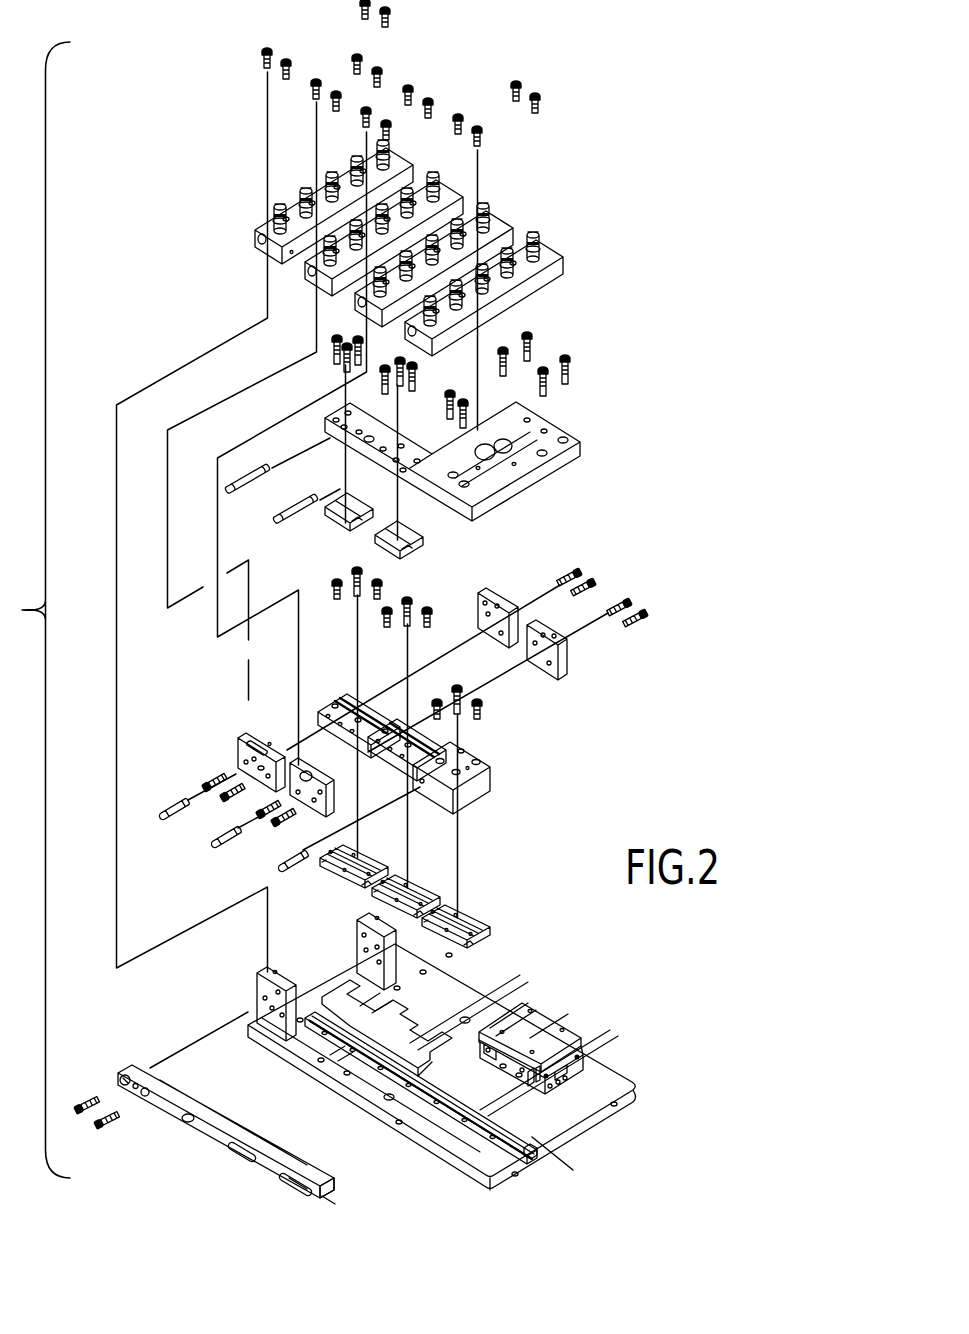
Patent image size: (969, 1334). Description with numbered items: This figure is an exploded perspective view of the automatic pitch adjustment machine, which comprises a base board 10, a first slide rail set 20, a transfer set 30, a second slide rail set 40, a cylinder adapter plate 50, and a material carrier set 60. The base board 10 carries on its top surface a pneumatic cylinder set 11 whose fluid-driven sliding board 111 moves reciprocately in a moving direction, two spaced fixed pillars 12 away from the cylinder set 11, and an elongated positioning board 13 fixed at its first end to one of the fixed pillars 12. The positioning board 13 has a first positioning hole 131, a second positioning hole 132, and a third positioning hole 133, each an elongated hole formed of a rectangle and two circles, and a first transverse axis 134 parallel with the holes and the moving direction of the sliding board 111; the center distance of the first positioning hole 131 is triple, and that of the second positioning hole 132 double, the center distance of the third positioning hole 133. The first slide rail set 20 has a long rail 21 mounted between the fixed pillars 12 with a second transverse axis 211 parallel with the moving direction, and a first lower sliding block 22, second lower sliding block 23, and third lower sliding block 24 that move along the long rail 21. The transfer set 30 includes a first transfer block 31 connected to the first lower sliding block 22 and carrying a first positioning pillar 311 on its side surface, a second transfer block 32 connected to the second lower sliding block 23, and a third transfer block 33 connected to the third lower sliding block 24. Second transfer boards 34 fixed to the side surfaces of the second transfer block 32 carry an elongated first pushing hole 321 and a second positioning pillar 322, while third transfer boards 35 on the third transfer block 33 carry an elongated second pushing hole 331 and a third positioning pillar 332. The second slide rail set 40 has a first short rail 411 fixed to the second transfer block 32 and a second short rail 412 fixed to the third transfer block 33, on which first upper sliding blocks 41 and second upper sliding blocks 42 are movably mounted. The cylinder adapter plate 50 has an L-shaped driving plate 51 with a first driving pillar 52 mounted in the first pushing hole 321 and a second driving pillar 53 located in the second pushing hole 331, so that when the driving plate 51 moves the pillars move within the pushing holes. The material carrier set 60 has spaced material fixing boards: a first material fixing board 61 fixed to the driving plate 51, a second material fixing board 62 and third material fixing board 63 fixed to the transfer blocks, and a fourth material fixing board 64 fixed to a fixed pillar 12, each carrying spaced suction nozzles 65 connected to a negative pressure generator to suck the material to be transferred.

The base board 10 is at (470, 1053).
The cylinder set 11 is at (566, 1041).
The sliding board 111 is at (548, 1012).
The fixed pillar 12 is at (358, 933).
The positioning board 13 is at (245, 1140).
The first positioning hole 131 is at (295, 1183).
The second positioning hole 132 is at (242, 1160).
The third positioning hole 133 is at (185, 1120).
The first transverse axis 134 is at (348, 1210).
The first slide rail set 20 is at (413, 900).
The long rail 21 is at (503, 1145).
The second transverse axis 211 is at (571, 1168).
The first lower sliding block 22 is at (488, 932).
The second lower sliding block 23 is at (440, 892).
The third lower sliding block 24 is at (355, 880).
The transfer set 30 is at (359, 729).
The first transfer block 31 is at (490, 780).
The first positioning pillar 311 is at (283, 866).
The second transfer block 32 is at (418, 745).
The first pushing hole 321 is at (305, 785).
The second positioning pillar 322 is at (218, 845).
The third transfer block 33 is at (372, 700).
The second pushing hole 331 is at (255, 745).
The third positioning pillar 332 is at (160, 806).
The second transfer board 34 is at (498, 595).
The third transfer board 35 is at (567, 650).
The second slide rail set 40 is at (405, 617).
The first upper sliding block 41 is at (417, 540).
The first short rail 411 is at (470, 715).
The second short rail 412 is at (350, 694).
The second upper sliding block 42 is at (352, 505).
The cylinder adapter plate 50 is at (418, 462).
The driving plate 51 is at (548, 426).
The first driving pillar 52 is at (278, 516).
The second driving pillar 53 is at (233, 488).
The material carrier set 60 is at (421, 243).
The first material fixing board 61 is at (565, 280).
The second material fixing board 62 is at (498, 222).
The third material fixing board 63 is at (450, 190).
The fourth material fixing board 64 is at (258, 240).
The suction nozzle 65 is at (390, 155).